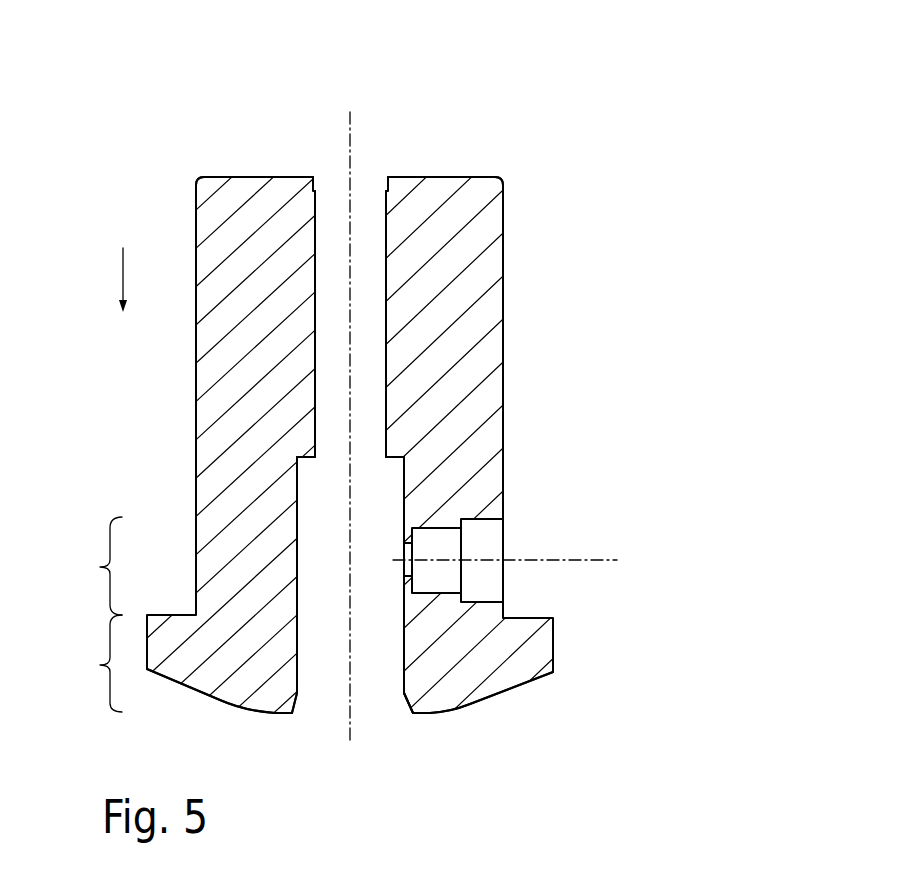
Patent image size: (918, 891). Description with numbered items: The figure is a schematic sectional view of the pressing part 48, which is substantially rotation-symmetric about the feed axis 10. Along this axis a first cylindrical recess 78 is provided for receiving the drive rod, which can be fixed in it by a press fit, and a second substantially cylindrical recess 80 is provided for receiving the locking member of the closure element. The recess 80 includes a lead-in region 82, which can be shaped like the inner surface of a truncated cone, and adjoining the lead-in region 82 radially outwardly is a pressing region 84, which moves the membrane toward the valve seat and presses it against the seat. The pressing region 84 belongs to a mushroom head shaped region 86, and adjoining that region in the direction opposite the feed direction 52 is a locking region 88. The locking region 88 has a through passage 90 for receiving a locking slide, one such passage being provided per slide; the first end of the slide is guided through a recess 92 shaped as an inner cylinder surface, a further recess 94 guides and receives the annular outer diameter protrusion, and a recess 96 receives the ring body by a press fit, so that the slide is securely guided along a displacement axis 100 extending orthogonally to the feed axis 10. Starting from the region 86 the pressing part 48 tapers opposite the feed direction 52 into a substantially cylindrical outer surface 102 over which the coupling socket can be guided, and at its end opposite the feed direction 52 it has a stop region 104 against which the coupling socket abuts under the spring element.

The feed axis 10 is at (347, 155).
The pressing part 48 is at (520, 128).
The feed direction 52 is at (122, 272).
The first cylindrical recess 78 is at (368, 205).
The second substantially cylindrical recess 80 is at (330, 670).
The lead-in region 82 is at (399, 713).
The pressing region 84 is at (494, 712).
The mushroom head shaped region 86 is at (95, 663).
The locking region 88 is at (95, 566).
The through passage 90 is at (604, 577).
The recess shaped as an inner cylinder surface 92 is at (407, 568).
The recess shaped as an inner cylinder surface 94 is at (443, 545).
The recess shaped as an inner cylinder surface 96 is at (490, 532).
The displacement axis 100 is at (603, 560).
The substantially cylindrical outer surface 102 is at (517, 325).
The stop region 104 is at (234, 167).